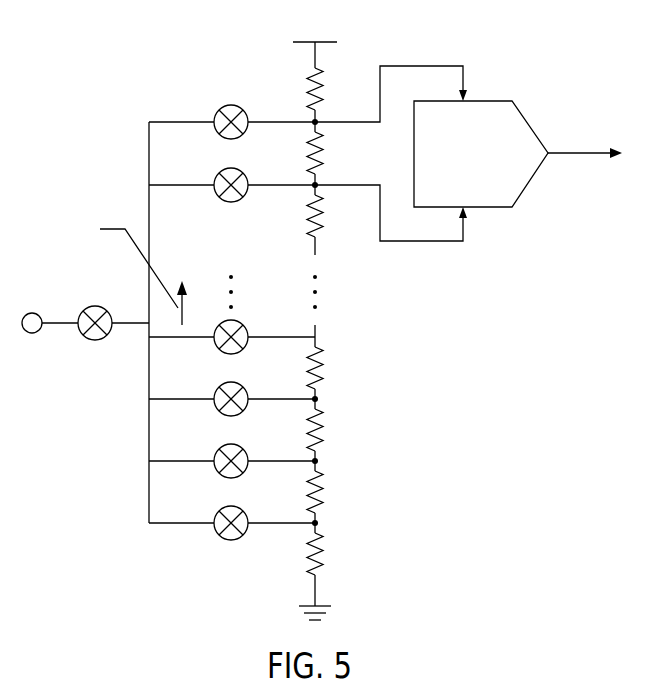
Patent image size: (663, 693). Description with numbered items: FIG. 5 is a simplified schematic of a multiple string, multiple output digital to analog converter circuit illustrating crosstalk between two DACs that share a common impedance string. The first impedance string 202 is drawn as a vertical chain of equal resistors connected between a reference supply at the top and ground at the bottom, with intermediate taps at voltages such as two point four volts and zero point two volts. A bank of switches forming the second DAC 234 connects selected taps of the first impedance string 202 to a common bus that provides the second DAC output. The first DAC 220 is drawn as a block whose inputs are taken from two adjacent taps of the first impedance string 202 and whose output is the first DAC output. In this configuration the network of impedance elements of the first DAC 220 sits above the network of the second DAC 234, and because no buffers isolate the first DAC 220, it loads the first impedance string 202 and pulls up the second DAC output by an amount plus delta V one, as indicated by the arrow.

The first impedance string 202 is at (362, 51).
The second DAC 234 is at (178, 73).
The first DAC 220 is at (485, 100).